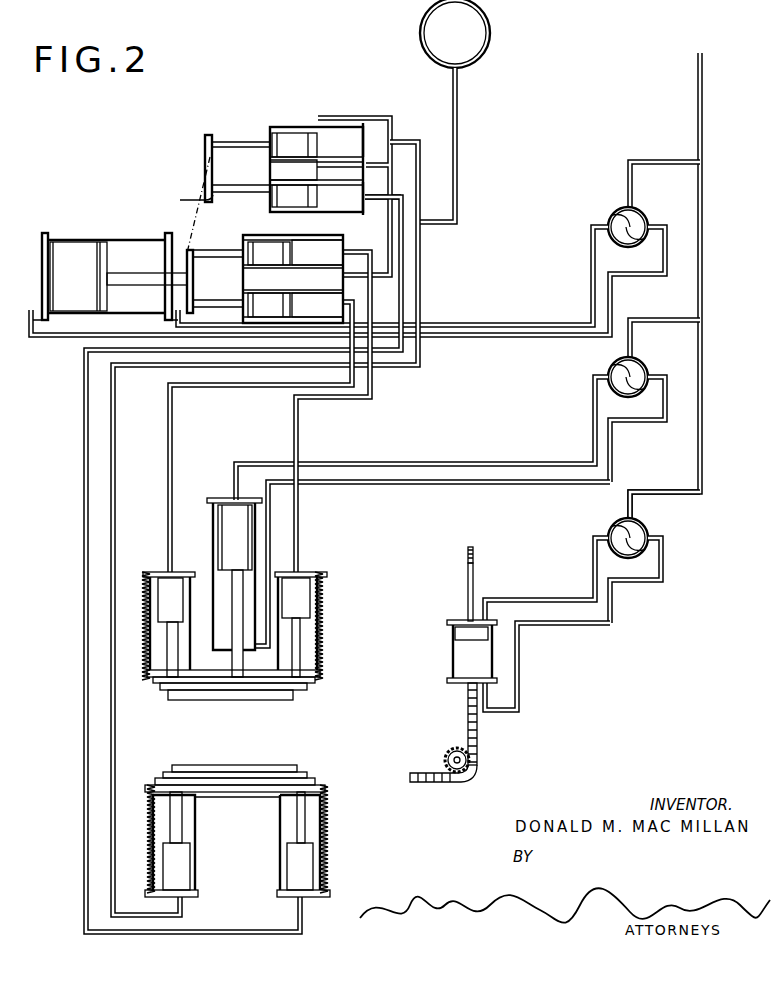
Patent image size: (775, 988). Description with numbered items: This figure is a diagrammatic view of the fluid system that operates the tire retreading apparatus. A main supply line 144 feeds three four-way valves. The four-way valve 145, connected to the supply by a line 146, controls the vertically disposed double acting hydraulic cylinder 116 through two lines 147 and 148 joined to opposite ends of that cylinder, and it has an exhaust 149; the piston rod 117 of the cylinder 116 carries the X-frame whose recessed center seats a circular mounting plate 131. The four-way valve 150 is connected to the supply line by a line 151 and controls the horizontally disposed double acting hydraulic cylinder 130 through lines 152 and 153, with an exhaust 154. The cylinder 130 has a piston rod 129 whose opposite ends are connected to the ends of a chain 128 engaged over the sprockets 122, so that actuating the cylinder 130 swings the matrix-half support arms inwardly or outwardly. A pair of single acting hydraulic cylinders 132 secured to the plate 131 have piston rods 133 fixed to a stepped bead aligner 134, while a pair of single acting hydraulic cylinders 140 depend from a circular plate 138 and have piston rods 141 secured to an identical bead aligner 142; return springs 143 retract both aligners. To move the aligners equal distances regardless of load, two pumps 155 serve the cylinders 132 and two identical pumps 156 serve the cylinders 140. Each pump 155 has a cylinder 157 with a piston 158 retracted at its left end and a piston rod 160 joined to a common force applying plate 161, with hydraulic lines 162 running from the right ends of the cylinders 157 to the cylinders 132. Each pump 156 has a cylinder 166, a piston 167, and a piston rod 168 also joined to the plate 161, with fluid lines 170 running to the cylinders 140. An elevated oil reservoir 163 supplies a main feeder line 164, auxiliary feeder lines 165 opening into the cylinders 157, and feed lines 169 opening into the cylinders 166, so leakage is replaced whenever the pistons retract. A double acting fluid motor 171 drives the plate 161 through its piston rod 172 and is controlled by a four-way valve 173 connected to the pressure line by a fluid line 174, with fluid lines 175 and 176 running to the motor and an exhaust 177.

The hydraulic cylinder 116 is at (206, 547).
The piston rod 117 is at (240, 678).
The sprocket 122 is at (450, 748).
The chain 128 is at (473, 552).
The piston rod 129 is at (474, 580).
The hydraulic cylinder 130 is at (453, 655).
The mounting plate 131 is at (325, 673).
The hydraulic cylinders 132 is at (318, 590).
The piston rod 133 is at (295, 634).
The bead aligner 134 is at (310, 690).
The circular plate 138 is at (233, 800).
The hydraulic cylinders 140 is at (195, 860).
The piston rods 141 is at (175, 822).
The bead aligner 142 is at (312, 780).
The return springs 143 is at (140, 597).
The main supply line 144 is at (703, 130).
The four-way valve 145 is at (640, 366).
The line 146 is at (664, 330).
The line 147 is at (508, 462).
The line 148 is at (542, 484).
The exhaust 149 is at (636, 400).
The four-way valve 150 is at (648, 530).
The line 151 is at (638, 492).
The line 152 is at (543, 598).
The line 153 is at (562, 628).
The exhaust 154 is at (665, 572).
The pumps 155 is at (242, 236).
The pumps 156 is at (305, 125).
The cylinder 157 is at (265, 235).
The piston 158 is at (293, 265).
The piston rods 160 is at (228, 300).
The force applying plate 161 is at (208, 162).
The hydraulic lines 162 is at (174, 436).
The oil reservoir 163 is at (490, 30).
The main feeder line 164 is at (458, 166).
The auxiliary feeder lines 165 is at (428, 222).
The cylinders 166 is at (270, 127).
The piston 167 is at (268, 135).
The piston rod 168 is at (222, 137).
The feed lines 169 is at (378, 115).
The fluid lines 170 is at (110, 483).
The fluid motor 171 is at (80, 240).
The piston rod 172 is at (118, 272).
The four-way valve 173 is at (640, 213).
The fluid line 174 is at (662, 160).
The fluid line 175 is at (590, 258).
The fluid line 176 is at (610, 298).
The exhaust 177 is at (636, 255).